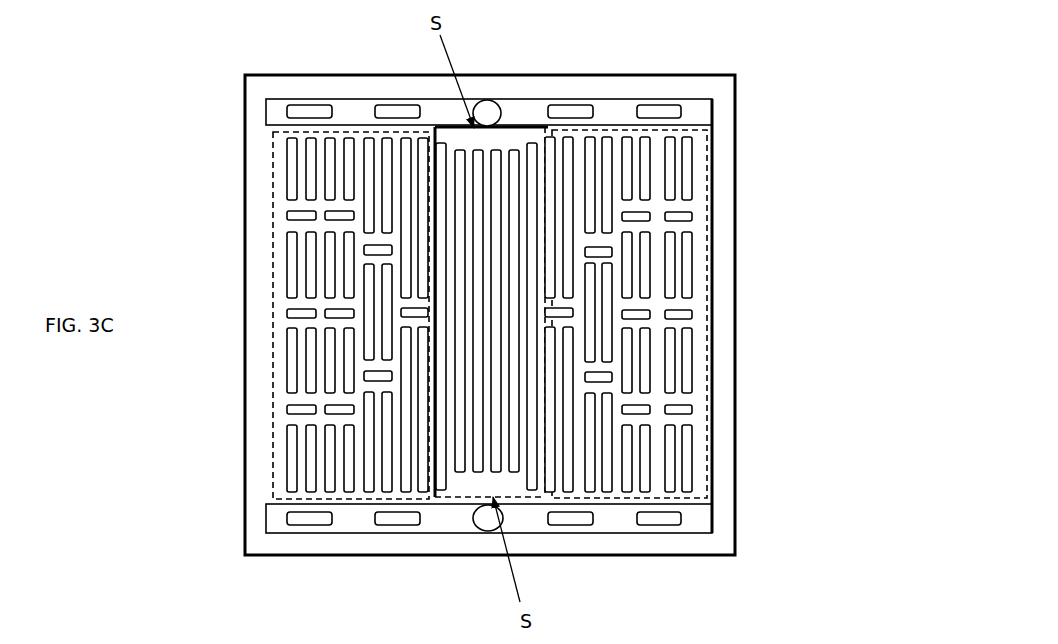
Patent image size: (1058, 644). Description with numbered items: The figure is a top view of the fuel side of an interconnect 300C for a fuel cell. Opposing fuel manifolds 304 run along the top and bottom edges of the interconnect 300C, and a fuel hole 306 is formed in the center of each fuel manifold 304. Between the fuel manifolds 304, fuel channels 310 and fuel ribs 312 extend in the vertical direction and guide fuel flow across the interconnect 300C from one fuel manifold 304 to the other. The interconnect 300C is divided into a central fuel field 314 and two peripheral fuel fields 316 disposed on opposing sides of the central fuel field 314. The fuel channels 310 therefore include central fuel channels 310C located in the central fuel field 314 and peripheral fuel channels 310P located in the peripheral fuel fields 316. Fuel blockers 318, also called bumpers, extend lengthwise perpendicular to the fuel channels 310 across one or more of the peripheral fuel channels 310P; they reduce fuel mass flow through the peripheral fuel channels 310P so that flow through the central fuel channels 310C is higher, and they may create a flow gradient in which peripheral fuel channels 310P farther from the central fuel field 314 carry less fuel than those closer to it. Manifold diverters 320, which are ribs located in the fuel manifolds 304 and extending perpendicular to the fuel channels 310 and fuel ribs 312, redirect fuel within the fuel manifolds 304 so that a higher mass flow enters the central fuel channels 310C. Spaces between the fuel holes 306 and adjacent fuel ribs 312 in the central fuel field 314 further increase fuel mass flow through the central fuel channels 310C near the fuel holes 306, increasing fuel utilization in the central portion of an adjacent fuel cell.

The interconnect 300C is at (196, 91).
The fuel manifolds 304 is at (713, 101).
The fuel holes 306 is at (487, 100).
The fuel channels 310 is at (624, 314).
The central fuel channels 310C is at (529, 248).
The peripheral fuel channels 310P is at (659, 258).
The fuel ribs 312 is at (518, 220).
The central fuel field 314 is at (552, 310).
The peripheral fuel fields 316 is at (272, 305).
The fuel blockers 318 is at (603, 373).
The manifold diverters 320 is at (660, 106).